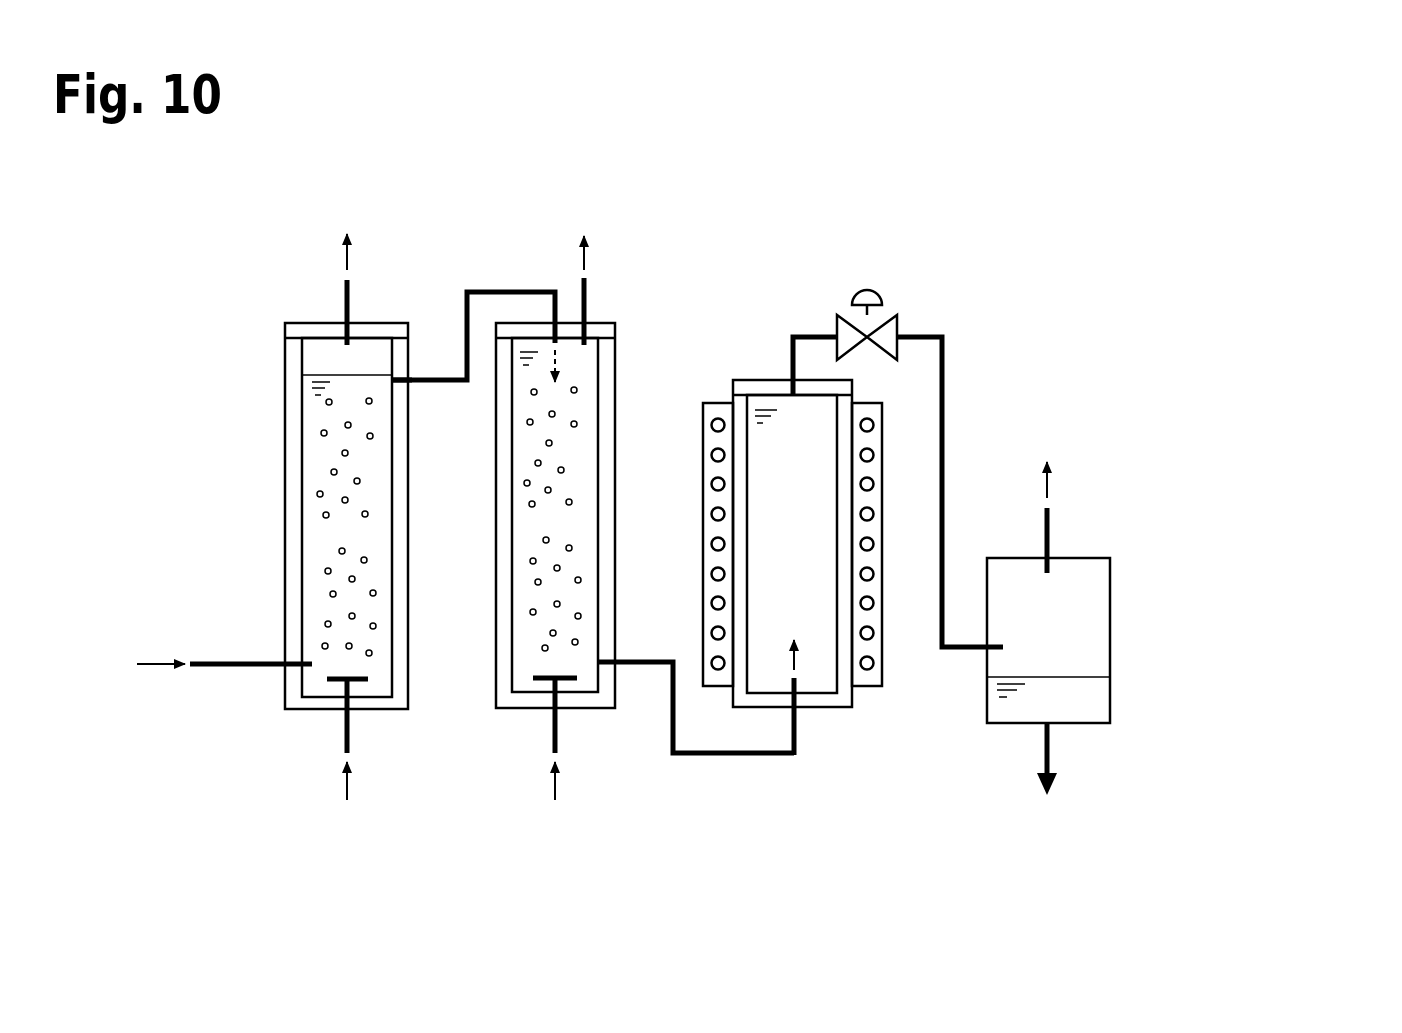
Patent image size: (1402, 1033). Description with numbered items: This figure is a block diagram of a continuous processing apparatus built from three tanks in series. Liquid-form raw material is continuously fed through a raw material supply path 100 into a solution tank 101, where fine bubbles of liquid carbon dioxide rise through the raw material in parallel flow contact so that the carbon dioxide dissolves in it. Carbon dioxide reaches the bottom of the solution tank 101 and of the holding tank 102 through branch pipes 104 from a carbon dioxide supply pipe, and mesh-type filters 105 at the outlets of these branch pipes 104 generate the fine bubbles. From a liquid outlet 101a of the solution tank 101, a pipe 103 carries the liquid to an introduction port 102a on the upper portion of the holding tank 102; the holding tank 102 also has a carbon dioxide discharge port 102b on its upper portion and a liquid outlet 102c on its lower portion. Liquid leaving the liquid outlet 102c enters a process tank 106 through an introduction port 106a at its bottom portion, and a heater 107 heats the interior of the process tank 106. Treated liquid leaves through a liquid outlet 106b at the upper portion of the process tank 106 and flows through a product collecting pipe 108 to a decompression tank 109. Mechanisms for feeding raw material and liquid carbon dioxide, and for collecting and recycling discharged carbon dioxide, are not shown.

The raw material supply path 100 is at (202, 670).
The solution tank 101 is at (285, 323).
The liquid outlet 101a is at (397, 380).
The holding tank 102 is at (615, 323).
The introduction port 102a is at (560, 347).
The carbon dioxide discharge port 102b is at (587, 297).
The liquid outlet 102c is at (598, 662).
The pipe 103 is at (480, 290).
The branch pipes 104 is at (345, 738).
The mesh-type filters 105 is at (330, 677).
The process tank 106 is at (852, 707).
The introduction port 106a is at (790, 690).
The liquid outlet 106b is at (790, 387).
The heater 107 is at (882, 686).
The product collecting pipe 108 is at (942, 348).
The decompression tank 109 is at (1078, 557).